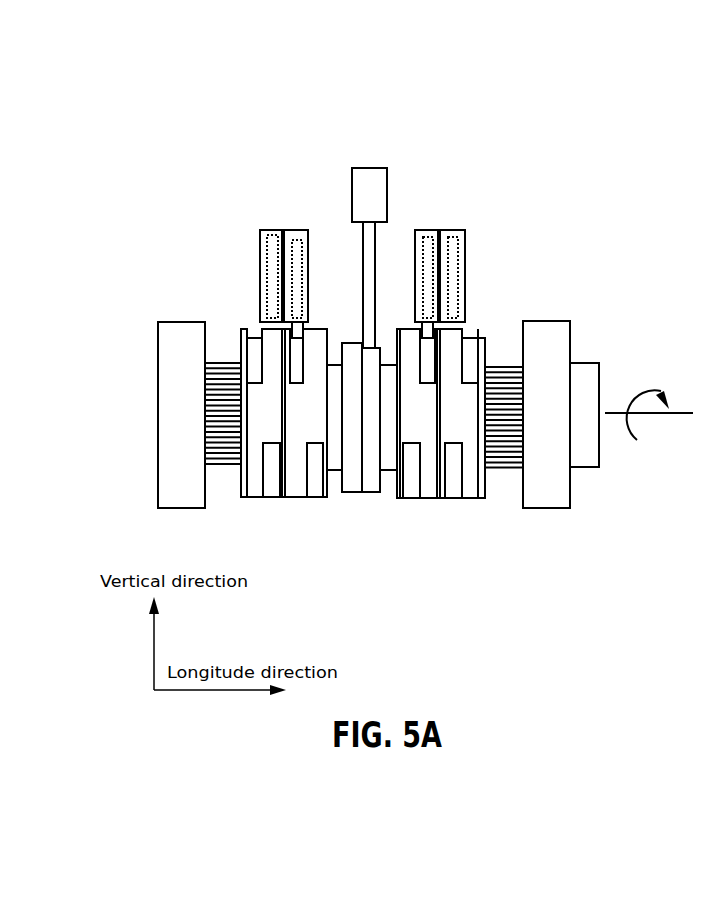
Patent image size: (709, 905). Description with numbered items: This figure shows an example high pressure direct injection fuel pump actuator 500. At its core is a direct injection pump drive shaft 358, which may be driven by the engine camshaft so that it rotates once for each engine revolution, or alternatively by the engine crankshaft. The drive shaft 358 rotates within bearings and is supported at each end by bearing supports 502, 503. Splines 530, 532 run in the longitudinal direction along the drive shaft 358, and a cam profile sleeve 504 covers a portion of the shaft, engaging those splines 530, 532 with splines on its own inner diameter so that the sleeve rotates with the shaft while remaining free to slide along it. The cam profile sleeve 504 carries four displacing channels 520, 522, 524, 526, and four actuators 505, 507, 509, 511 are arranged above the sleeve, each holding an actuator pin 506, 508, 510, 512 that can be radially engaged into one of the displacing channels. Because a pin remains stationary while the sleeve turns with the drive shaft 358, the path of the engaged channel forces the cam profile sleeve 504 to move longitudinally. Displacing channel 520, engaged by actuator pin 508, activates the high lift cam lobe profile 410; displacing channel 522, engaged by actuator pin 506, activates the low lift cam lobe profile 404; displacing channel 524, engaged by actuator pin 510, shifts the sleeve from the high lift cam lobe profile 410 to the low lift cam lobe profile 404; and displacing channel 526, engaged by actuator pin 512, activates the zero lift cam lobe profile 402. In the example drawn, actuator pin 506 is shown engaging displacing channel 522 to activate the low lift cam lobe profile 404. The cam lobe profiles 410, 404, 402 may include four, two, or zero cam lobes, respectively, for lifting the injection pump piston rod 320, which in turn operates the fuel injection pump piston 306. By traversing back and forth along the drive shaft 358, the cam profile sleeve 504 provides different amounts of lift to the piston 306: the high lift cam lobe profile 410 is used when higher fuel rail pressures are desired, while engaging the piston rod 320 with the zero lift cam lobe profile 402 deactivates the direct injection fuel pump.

The direct injection fuel pump actuator 500 is at (124, 52).
The fuel injection pump piston 306 is at (387, 192).
The injection pump piston rod 320 is at (363, 232).
The zero lift cam lobe profile 402 is at (388, 470).
The low lift cam lobe profile 404 is at (368, 488).
The high lift cam lobe profile 410 is at (342, 492).
The bearing support 502 is at (167, 508).
The bearing support 503 is at (542, 508).
The cam profile sleeve 504 is at (243, 328).
The actuator 505 is at (309, 237).
The actuator pin 506 is at (295, 240).
The actuator 507 is at (260, 261).
The actuator pin 508 is at (267, 232).
The actuator 509 is at (415, 282).
The actuator pin 510 is at (428, 237).
The actuator 511 is at (466, 262).
The actuator pin 512 is at (453, 238).
The displacing channel 520 is at (255, 371).
The displacing channel 522 is at (295, 371).
The displacing channel 524 is at (425, 368).
The displacing channel 526 is at (469, 368).
The spline 530 is at (232, 467).
The spline 532 is at (505, 367).
The direct injection pump drive shaft 358 is at (583, 363).